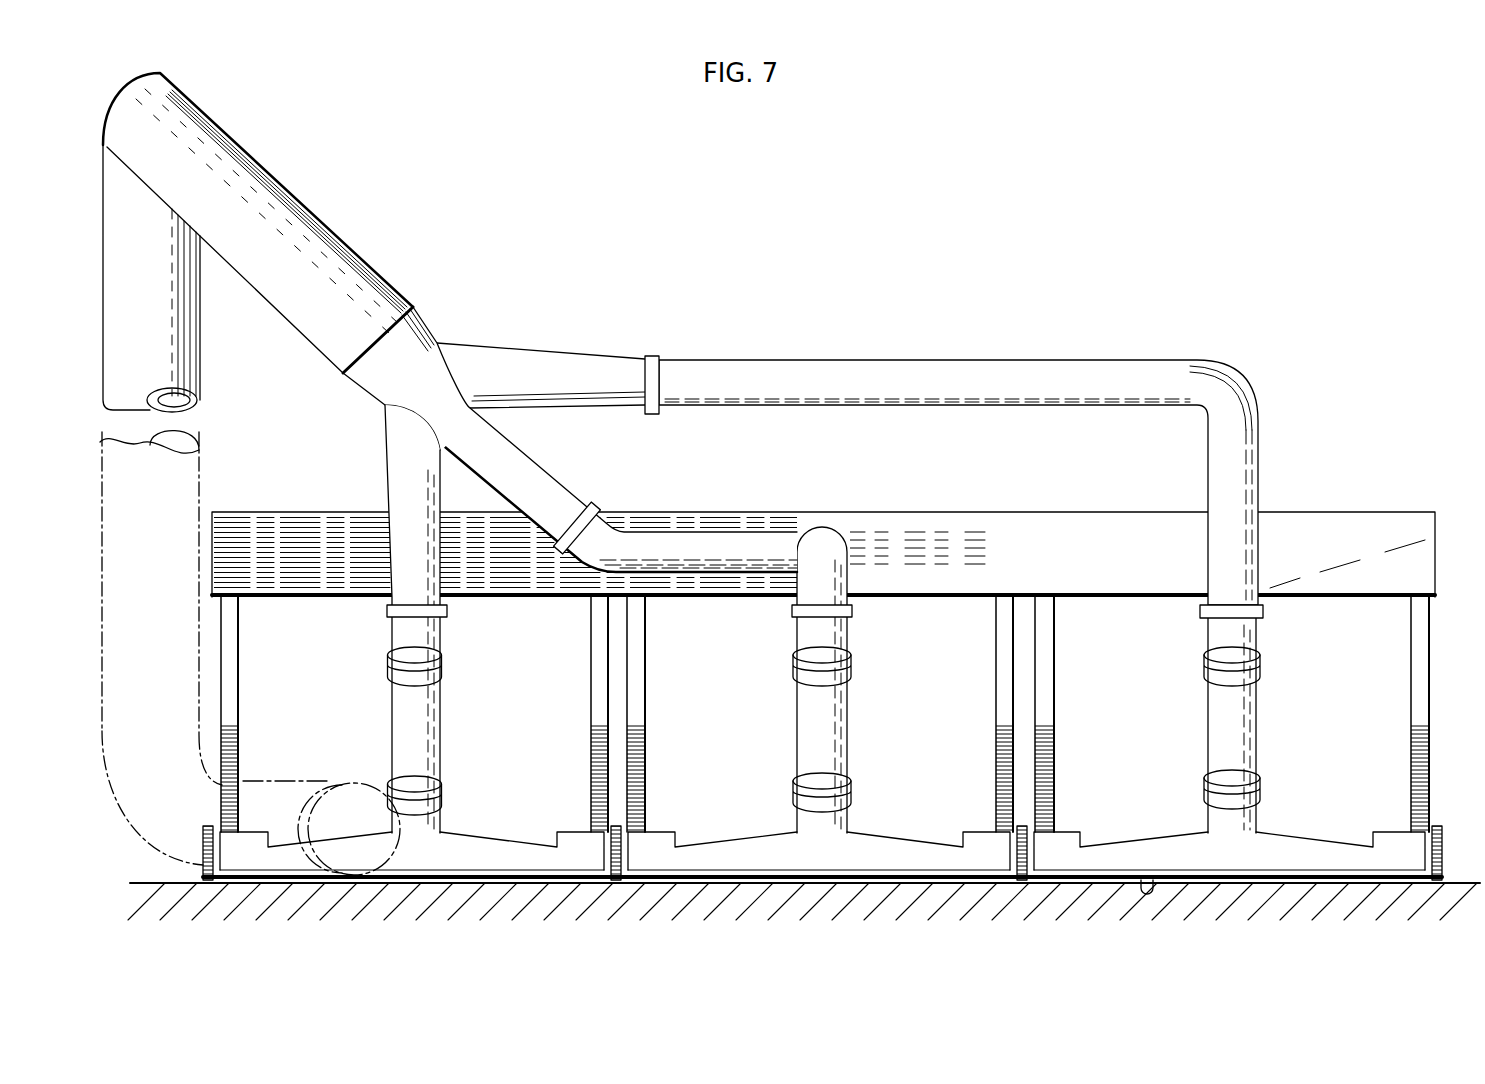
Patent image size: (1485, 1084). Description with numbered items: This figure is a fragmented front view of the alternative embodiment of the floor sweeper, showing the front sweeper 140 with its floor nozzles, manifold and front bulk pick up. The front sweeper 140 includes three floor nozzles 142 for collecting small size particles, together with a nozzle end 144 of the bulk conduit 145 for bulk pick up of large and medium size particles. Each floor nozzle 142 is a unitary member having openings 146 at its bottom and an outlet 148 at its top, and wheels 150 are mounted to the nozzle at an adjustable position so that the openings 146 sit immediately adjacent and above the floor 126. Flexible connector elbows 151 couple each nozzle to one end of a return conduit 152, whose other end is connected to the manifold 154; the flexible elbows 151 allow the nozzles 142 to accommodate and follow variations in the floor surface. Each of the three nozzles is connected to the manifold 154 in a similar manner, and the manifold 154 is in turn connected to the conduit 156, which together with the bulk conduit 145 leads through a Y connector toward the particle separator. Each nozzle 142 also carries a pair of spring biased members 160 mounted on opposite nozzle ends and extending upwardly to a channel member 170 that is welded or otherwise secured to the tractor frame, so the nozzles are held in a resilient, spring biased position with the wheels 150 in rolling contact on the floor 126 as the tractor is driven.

The floor 126 is at (1353, 883).
The front sweeper 140 is at (1231, 347).
The floor nozzle 142 is at (480, 847).
The nozzle end 144 is at (308, 790).
The conduit 145 is at (185, 505).
The openings 146 is at (1141, 880).
The outlet 148 is at (1208, 820).
The wheels 150 is at (1000, 808).
The elbows 151 is at (398, 690).
The return conduit 152 is at (1012, 367).
The manifold 154 is at (417, 343).
The conduit 156 is at (277, 187).
The spring biased members 160 is at (243, 675).
The channel member 170 is at (902, 523).